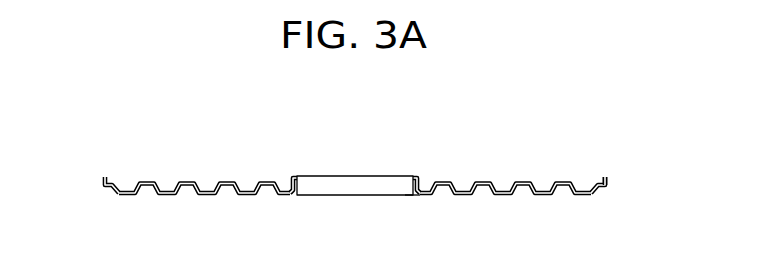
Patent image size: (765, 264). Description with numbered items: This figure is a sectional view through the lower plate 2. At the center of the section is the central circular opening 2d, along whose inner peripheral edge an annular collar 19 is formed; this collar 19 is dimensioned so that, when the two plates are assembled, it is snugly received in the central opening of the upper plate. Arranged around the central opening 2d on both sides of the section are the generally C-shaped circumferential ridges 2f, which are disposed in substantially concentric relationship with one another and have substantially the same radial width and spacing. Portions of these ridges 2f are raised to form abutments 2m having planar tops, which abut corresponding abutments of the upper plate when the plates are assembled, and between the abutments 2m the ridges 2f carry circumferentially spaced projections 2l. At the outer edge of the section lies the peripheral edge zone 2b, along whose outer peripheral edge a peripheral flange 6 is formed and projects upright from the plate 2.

The lower plate 2 is at (350, 188).
The peripheral edge zone 2b is at (113, 180).
The central circular opening 2d is at (410, 192).
The C-shaped circumferential ridges 2f is at (275, 196).
The projections 2l is at (227, 183).
The abutments 2m is at (265, 182).
The peripheral flange 6 is at (606, 178).
The annular collar 19 is at (414, 176).